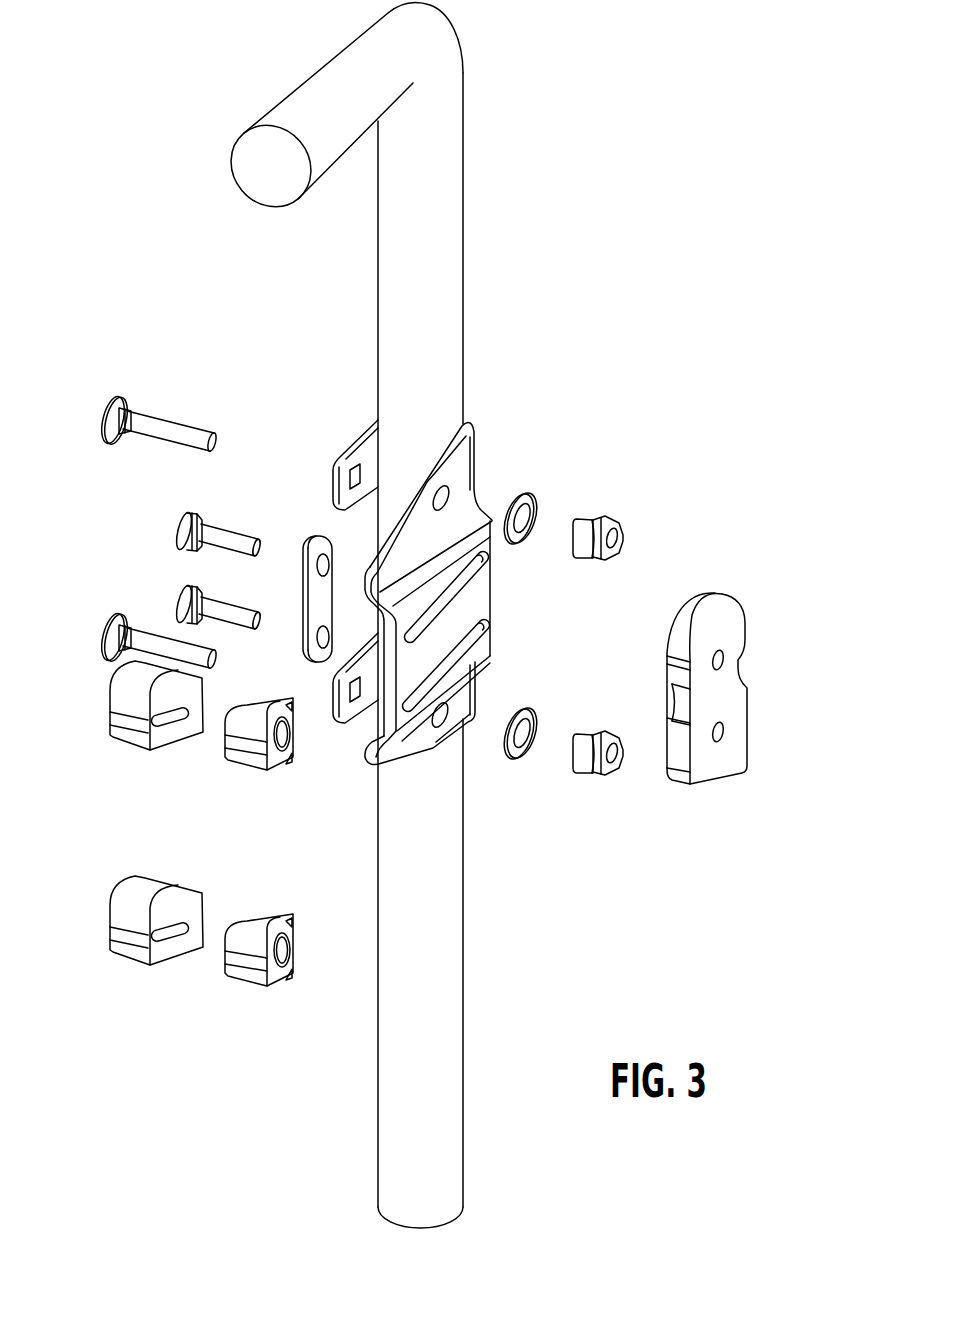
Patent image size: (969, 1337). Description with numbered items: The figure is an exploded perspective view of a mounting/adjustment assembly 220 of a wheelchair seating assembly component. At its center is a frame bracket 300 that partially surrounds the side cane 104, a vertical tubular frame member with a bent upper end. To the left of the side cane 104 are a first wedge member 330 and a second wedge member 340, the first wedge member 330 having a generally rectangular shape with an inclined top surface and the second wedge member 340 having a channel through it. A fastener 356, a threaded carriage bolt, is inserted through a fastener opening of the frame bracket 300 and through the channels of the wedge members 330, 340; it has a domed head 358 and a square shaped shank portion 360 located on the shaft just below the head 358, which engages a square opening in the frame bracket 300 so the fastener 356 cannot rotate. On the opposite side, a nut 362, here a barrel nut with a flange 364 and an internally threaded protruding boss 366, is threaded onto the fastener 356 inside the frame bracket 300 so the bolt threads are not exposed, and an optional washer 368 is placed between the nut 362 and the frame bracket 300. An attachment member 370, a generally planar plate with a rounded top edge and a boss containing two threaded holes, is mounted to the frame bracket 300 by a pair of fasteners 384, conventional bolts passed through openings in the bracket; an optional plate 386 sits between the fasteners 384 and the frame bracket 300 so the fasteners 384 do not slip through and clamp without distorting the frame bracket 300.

The side cane 104 is at (397, 329).
The mounting/adjustment assembly 220 is at (540, 205).
The frame bracket 300 is at (460, 467).
The first wedge member 330 is at (252, 763).
The second wedge member 340 is at (128, 743).
The fastener 356 is at (101, 359).
The domed head 358 is at (103, 425).
The square shaped shank portion 360 is at (127, 408).
The nut 362 is at (594, 522).
The flange 364 is at (602, 773).
The protruding boss 366 is at (580, 763).
The washer 368 is at (530, 497).
The attachment member 370 is at (727, 694).
The fasteners 384 is at (228, 536).
The plate 386 is at (300, 630).